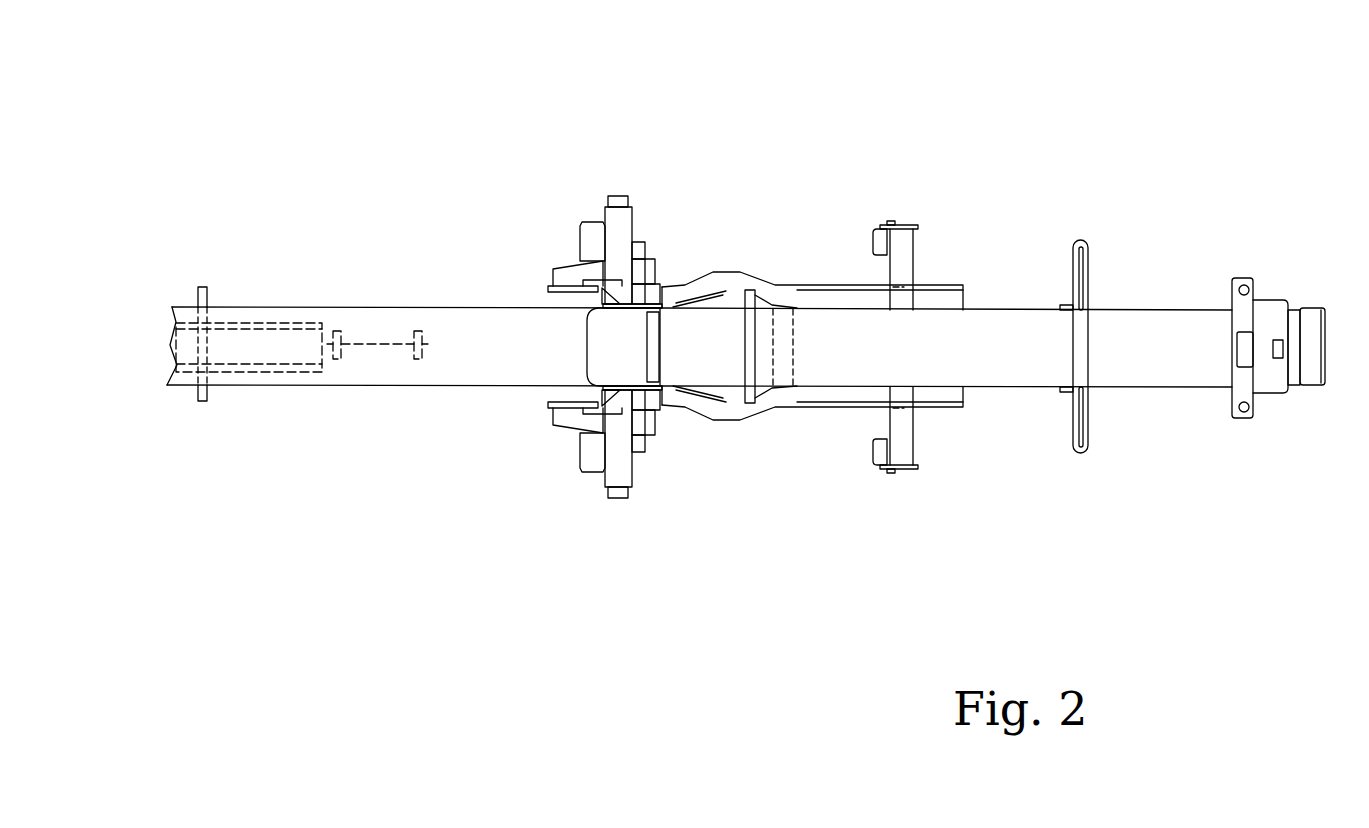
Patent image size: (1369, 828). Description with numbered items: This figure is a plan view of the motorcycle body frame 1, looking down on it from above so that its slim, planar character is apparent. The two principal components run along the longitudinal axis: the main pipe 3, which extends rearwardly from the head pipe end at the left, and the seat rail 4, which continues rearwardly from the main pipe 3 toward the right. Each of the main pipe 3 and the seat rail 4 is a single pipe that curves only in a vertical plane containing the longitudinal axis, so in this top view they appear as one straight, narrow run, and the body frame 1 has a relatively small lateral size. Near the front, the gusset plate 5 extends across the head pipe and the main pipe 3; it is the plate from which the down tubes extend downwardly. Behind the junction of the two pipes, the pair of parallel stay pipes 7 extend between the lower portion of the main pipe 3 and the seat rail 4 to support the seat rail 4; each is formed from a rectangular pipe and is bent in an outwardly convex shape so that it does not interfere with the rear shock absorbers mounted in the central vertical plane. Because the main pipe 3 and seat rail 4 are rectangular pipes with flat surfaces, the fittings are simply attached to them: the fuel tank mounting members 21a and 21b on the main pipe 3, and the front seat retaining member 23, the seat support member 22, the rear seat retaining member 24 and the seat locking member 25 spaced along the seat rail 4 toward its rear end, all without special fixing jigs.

The body frame 1 is at (1132, 147).
The main pipe 3 is at (478, 307).
The seat rail 4 is at (1018, 310).
The gusset plate 5 is at (282, 325).
The stay pipes 7 is at (800, 288).
The fuel tank mounting member 21a is at (205, 287).
The fuel tank mounting member 21b is at (662, 340).
The seat support member 22 is at (912, 253).
The front seat retaining member 23 is at (745, 328).
The rear seat retaining member 24 is at (1088, 260).
The seat locking member 25 is at (1262, 300).